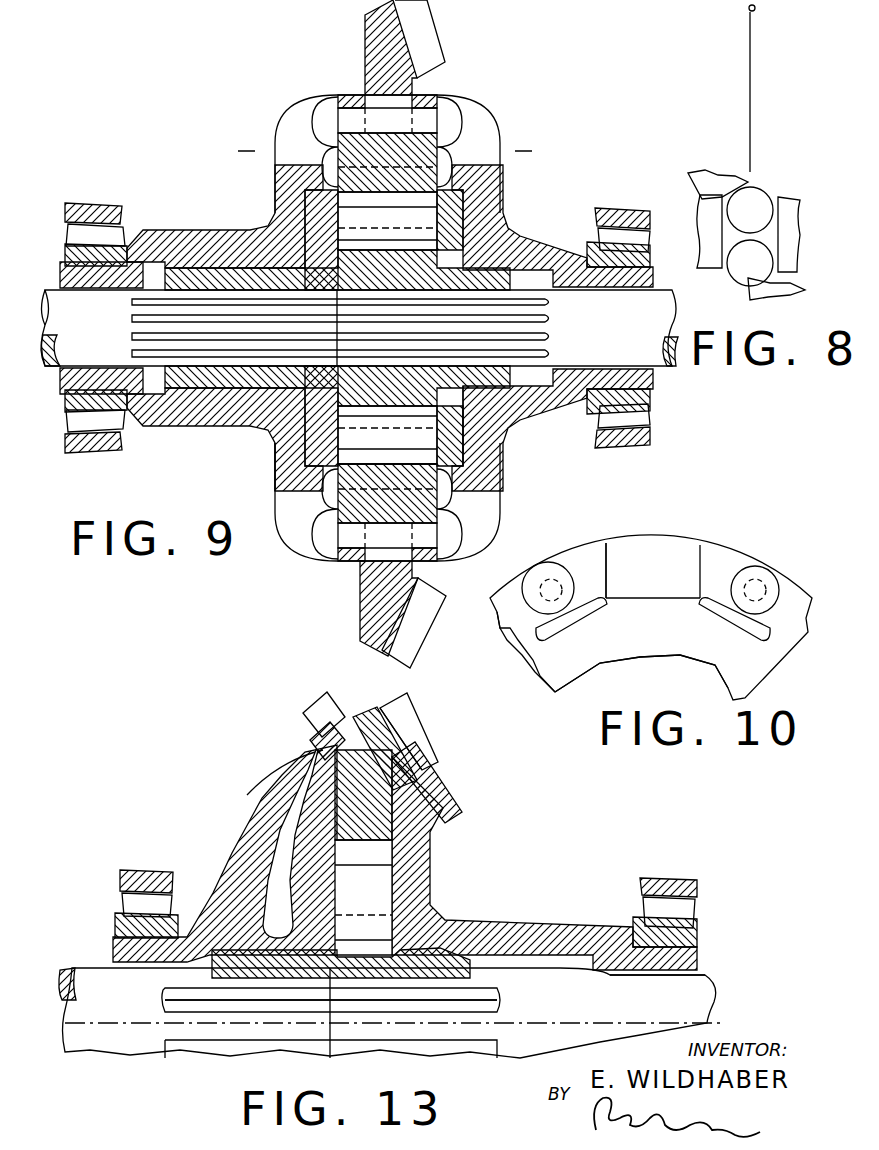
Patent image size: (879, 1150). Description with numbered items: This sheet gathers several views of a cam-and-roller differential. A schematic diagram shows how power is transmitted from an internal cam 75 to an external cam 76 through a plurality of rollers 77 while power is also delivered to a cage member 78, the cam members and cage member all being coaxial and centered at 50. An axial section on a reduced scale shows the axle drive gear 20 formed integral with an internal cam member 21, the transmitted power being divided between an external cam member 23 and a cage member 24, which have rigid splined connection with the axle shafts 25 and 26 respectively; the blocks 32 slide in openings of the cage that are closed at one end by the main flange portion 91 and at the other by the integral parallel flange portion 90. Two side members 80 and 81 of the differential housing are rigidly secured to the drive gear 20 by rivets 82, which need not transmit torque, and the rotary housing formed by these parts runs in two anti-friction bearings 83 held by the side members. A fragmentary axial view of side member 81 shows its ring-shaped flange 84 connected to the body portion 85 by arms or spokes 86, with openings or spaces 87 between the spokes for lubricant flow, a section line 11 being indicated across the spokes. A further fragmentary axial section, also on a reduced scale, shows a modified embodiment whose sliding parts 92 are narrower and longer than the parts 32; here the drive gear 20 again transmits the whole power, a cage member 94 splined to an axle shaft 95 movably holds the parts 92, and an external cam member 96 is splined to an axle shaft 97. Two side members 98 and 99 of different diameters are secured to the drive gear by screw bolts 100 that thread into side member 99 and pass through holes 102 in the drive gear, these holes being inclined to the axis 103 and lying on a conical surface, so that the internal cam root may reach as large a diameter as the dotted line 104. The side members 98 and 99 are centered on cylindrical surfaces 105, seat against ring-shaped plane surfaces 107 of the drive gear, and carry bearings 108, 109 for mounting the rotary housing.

In FIG. 9, the section line 11 is at (389, 154).
In FIG. 9, the axle drive gear 20 is at (365, 48).
In FIG. 13, the axle drive gear 20 is at (372, 712).
In FIG. 9, the internal cam member 21 is at (335, 474).
In FIG. 9, the external cam member 23 is at (505, 232).
In FIG. 9, the cage member 24 is at (305, 197).
In FIG. 9, the axle shaft 25 is at (655, 314).
In FIG. 9, the axle shaft 26 is at (65, 302).
In FIG. 9, the blocks 32 is at (387, 328).
In FIG. 8, the center 50 is at (756, 12).
In FIG. 8, the internal cam 75 is at (782, 290).
In FIG. 8, the external cam 76 is at (712, 180).
In FIG. 8, the rollers 77 is at (750, 236).
In FIG. 8, the cage member 78 is at (790, 245).
In FIG. 9, the side member 80 is at (280, 449).
In FIG. 9, the side member 81 is at (476, 456).
In FIG. 10, the side member 81 is at (612, 652).
In FIG. 9, the rivets 82 is at (420, 118).
In FIG. 9, the anti-friction bearings 83 is at (75, 204).
In FIG. 10, the ring-shaped flange 84 is at (718, 562).
In FIG. 10, the body portion 85 is at (653, 617).
In FIG. 9, the arms or spokes 86 is at (305, 125).
In FIG. 10, the arms or spokes 86 is at (630, 562).
In FIG. 10, the openings or spaces 87 is at (562, 617).
In FIG. 9, the integral parallel flange portion 90 is at (460, 206).
In FIG. 9, the main flange portion 91 is at (313, 225).
In FIG. 13, the sliding parts 92 is at (378, 878).
In FIG. 13, the cage member 94 is at (305, 893).
In FIG. 13, the axle shaft 95 is at (389, 1013).
In FIG. 13, the external cam member 96 is at (445, 955).
In FIG. 13, the axle shaft 97 is at (632, 994).
In FIG. 13, the side member 98 is at (255, 828).
In FIG. 13, the side member 99 is at (410, 845).
In FIG. 13, the screw bolts 100 is at (322, 712).
In FIG. 13, the holes 102 is at (372, 747).
In FIG. 13, the axis 103 is at (445, 1030).
In FIG. 13, the dotted line 104 is at (345, 797).
In FIG. 13, the cylindrical surfaces 105 is at (400, 775).
In FIG. 13, the plane surfaces 107 is at (333, 737).
In FIG. 13, the bearing 108 is at (148, 878).
In FIG. 13, the bearing 109 is at (662, 882).